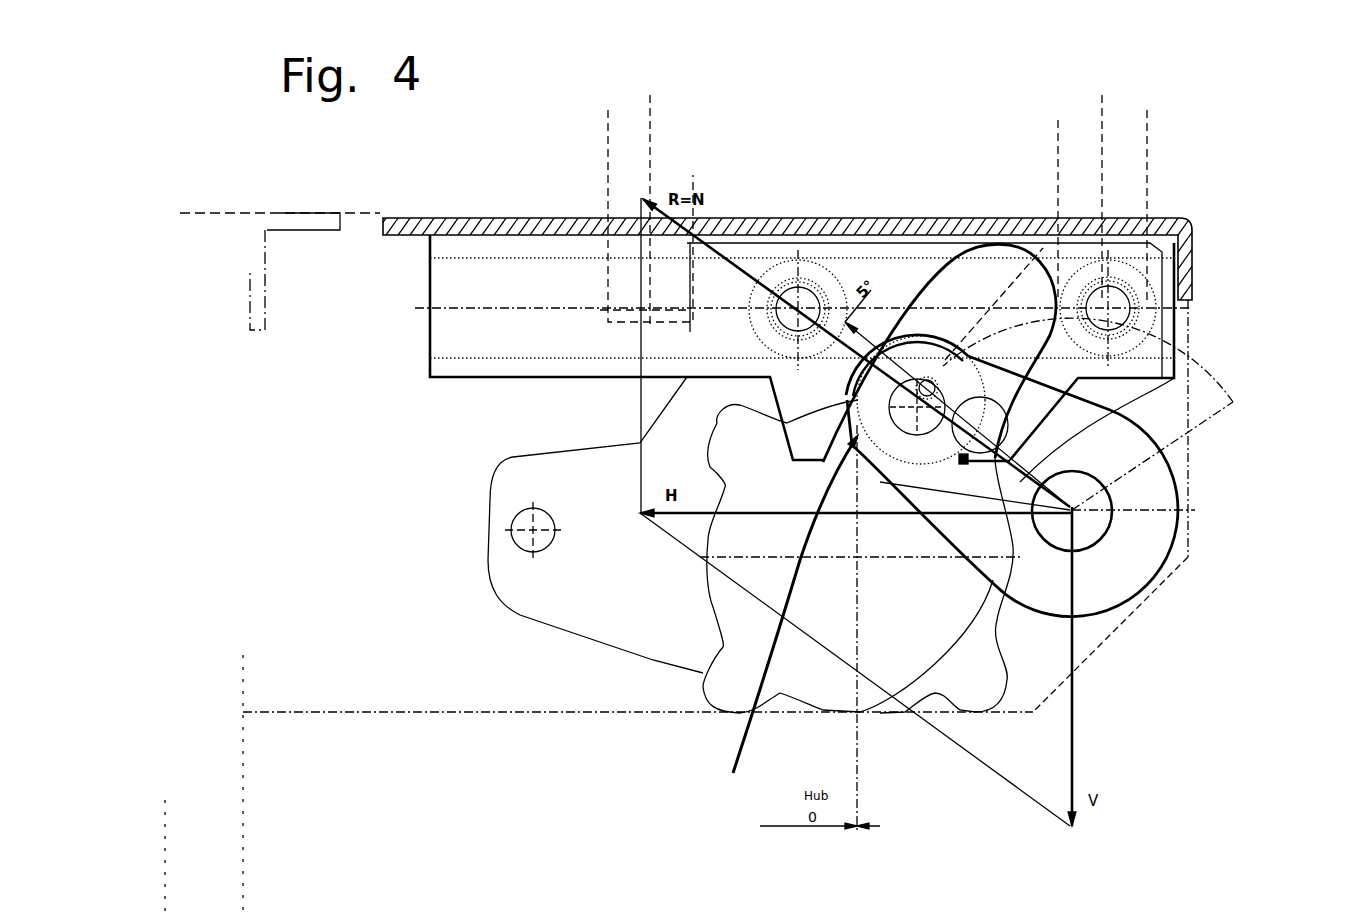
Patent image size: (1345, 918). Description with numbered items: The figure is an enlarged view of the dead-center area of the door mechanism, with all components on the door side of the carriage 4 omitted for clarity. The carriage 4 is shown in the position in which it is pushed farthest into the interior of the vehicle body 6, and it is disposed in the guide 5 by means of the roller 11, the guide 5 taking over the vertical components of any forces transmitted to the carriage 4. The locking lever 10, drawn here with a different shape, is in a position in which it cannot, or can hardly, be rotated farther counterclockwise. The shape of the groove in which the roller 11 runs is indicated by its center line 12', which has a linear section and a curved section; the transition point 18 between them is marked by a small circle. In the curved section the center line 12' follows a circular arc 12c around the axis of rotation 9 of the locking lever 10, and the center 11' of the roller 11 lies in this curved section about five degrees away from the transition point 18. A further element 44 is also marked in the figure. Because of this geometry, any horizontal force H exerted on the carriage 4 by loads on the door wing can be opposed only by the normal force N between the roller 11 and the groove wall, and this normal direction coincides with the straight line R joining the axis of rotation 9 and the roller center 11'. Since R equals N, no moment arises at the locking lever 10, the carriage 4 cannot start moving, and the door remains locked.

The carriage 4 is at (636, 600).
The guide 5 is at (482, 306).
The vehicle body 6 is at (436, 184).
The axis of rotation 9 is at (1093, 528).
The locking lever 10 is at (1145, 493).
The roller 11 is at (773, 632).
The center of the roller 11' is at (896, 289).
The center line 12' is at (1133, 179).
The circular arc 12c is at (1207, 370).
The transition point 18 is at (930, 385).
The stop 44 is at (983, 473).